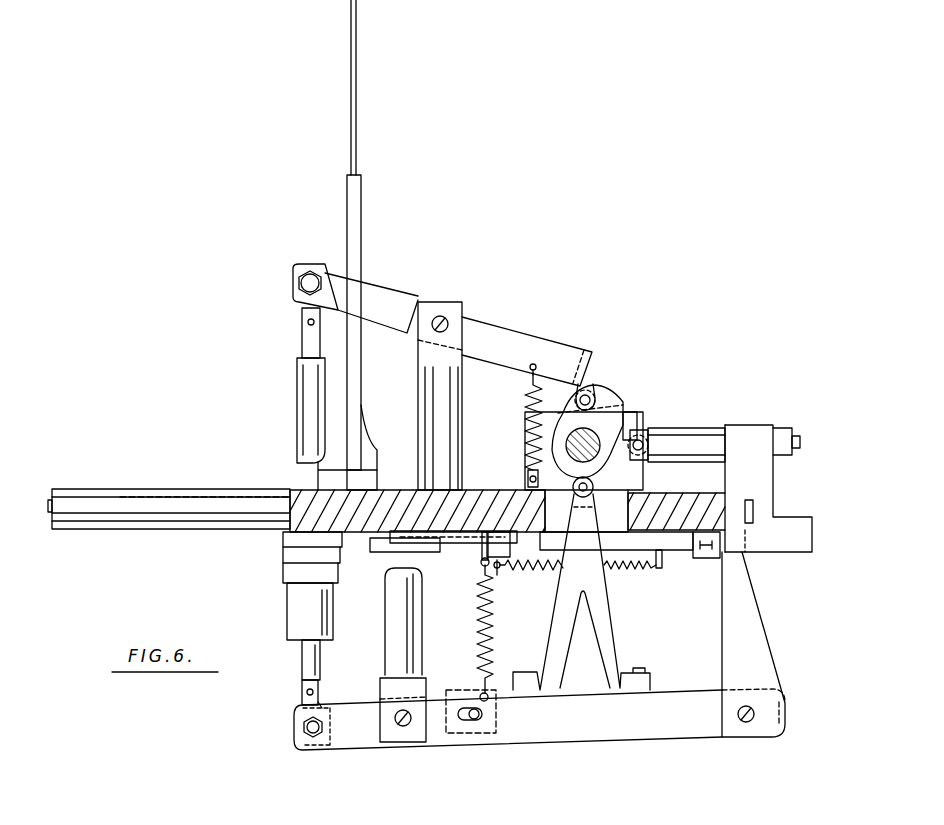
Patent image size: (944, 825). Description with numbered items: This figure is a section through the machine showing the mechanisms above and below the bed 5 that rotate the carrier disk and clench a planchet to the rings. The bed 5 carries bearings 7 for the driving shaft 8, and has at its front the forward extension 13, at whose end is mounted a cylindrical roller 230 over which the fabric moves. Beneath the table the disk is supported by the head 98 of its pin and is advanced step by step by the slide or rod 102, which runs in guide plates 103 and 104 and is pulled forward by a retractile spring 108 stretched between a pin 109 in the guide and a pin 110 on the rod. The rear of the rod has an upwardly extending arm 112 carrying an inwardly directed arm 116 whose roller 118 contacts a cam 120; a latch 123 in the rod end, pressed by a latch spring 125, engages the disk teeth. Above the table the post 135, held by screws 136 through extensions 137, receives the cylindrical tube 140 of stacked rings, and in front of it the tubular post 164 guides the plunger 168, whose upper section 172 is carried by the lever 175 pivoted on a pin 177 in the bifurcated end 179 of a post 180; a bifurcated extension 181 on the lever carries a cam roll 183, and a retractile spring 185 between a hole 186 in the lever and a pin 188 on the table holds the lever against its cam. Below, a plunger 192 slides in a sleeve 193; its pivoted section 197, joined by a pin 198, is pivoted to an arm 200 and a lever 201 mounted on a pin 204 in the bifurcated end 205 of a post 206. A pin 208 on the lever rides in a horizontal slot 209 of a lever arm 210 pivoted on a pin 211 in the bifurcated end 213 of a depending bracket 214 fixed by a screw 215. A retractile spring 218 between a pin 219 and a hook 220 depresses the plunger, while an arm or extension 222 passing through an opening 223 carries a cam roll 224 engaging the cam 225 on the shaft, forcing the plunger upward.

The bed 5 is at (705, 505).
The bearings 7 is at (648, 440).
The driving shaft 8 is at (580, 452).
The forward extension 13 is at (100, 515).
The head 98 is at (345, 561).
The slide or rod 102 is at (645, 520).
The guide plate 103 is at (697, 544).
The guide plate 104 is at (512, 547).
The retractile spring 108 is at (625, 572).
The pin 109 is at (499, 571).
The pin 110 is at (663, 560).
The upwardly extending arm 112 is at (760, 479).
The inwardly directed arm 116 is at (700, 438).
The roller 118 is at (650, 438).
The cam 120 is at (612, 410).
The latch 123 is at (387, 533).
The latch spring 125 is at (413, 540).
The post 135 is at (360, 192).
The screws 136 is at (375, 463).
The extensions 137 is at (355, 487).
The cylindrical tube 140 is at (360, 55).
The tubular post 164 is at (306, 409).
The plunger 168 is at (305, 348).
The upper section 172 is at (312, 308).
The lever 175 is at (388, 298).
The pin 177 is at (447, 308).
The bifurcated end 179 is at (470, 330).
The post 180 is at (425, 414).
The bifurcated extension 181 is at (600, 368).
The cam roll 183 is at (570, 396).
The retractile spring 185 is at (525, 412).
The hole 186 is at (531, 365).
The pin 188 is at (527, 480).
The plunger 192 is at (305, 662).
The sleeve 193 is at (300, 607).
The pivoted section 197 is at (321, 704).
The pin 198 is at (303, 694).
The arm 200 is at (300, 727).
The lever 201 is at (368, 732).
The pin 204 is at (410, 726).
The bifurcated end 205 is at (410, 690).
The post 206 is at (395, 623).
The pin 208 is at (478, 723).
The horizontal slot 209 is at (497, 714).
The lever arm 210 is at (680, 729).
The pin 211 is at (751, 722).
The bifurcated end 213 is at (788, 711).
The bracket 214 is at (750, 632).
The screw 215 is at (755, 513).
The retractile spring 218 is at (493, 637).
The pin 219 is at (488, 692).
The hook 220 is at (482, 561).
The arm or extension 222 is at (615, 657).
The opening 223 is at (549, 566).
The cam roll 224 is at (596, 479).
The cam 225 is at (795, 440).
The cylindrical roller 230 is at (146, 497).